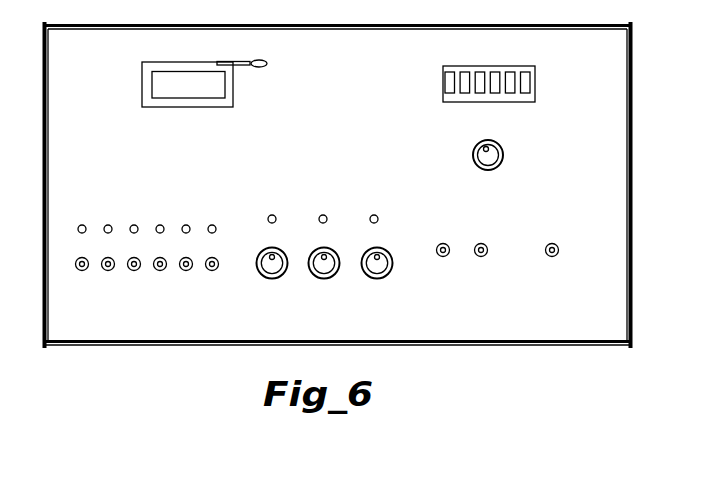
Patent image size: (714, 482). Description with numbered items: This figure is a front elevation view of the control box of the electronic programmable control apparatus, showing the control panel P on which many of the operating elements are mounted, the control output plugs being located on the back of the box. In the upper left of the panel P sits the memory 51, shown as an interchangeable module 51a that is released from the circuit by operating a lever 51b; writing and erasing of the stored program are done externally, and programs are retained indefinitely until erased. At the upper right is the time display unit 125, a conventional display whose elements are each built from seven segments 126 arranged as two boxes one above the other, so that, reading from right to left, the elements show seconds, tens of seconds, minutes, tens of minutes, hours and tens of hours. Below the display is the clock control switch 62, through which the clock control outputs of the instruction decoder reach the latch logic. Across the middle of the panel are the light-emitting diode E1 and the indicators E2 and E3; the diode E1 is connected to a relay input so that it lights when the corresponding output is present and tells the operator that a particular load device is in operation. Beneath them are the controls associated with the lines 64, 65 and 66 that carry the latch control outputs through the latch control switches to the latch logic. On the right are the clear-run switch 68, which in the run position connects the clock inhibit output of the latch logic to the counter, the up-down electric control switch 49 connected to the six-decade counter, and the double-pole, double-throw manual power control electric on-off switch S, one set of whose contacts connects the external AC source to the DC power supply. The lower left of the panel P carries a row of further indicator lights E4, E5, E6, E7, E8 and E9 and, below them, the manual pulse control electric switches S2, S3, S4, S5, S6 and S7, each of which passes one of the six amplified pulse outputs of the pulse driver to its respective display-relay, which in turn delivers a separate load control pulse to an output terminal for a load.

The control panel P is at (414, 23).
The memory 51 is at (136, 101).
The interchangeable module 51a is at (147, 77).
The lever 51b is at (243, 61).
The time display unit 125 is at (535, 66).
The segments 126 is at (530, 85).
The clock control switch 62 is at (503, 158).
The line 64 is at (269, 279).
The line 65 is at (323, 279).
The line 66 is at (376, 279).
The clear-run switch 68 is at (443, 243).
The up-down electric control switch 49 is at (481, 243).
The manual power control electric on-off switch S is at (562, 244).
The light-emitting diode E1 is at (272, 215).
The indicator lamp E2 is at (323, 215).
The indicator lamp E3 is at (374, 215).
The indicator lamp E4 is at (81, 225).
The indicator lamp E5 is at (108, 225).
The indicator lamp E6 is at (134, 225).
The indicator lamp E7 is at (160, 225).
The indicator lamp E8 is at (186, 225).
The indicator lamp E9 is at (212, 225).
The manual pulse control electric switch S2 is at (82, 271).
The manual pulse control electric switch S3 is at (108, 271).
The manual pulse control electric switch S4 is at (134, 271).
The manual pulse control electric switch S5 is at (160, 271).
The manual pulse control electric switch S6 is at (186, 271).
The manual pulse control electric switch S7 is at (211, 271).